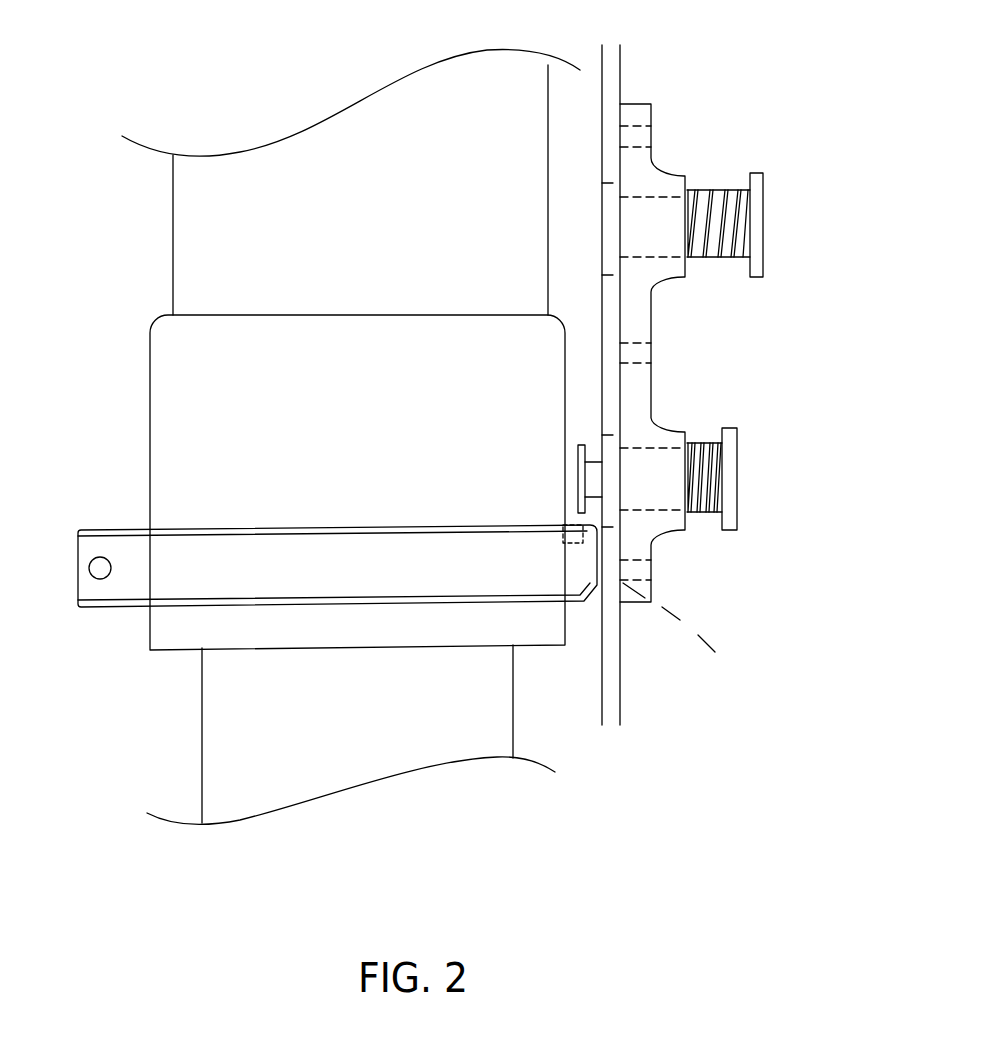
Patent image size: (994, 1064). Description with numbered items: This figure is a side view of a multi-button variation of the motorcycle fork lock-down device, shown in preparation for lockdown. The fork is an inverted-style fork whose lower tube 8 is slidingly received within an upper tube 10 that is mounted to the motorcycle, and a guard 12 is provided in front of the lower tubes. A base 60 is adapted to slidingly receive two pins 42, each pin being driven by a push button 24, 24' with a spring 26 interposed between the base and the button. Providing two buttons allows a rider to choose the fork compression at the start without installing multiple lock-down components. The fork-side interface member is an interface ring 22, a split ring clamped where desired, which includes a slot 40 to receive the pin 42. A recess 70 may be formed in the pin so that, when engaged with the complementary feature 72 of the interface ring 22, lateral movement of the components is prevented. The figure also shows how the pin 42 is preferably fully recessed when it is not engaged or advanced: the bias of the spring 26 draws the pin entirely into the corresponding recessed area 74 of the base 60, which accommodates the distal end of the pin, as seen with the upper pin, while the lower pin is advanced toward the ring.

The lower tube 8 is at (230, 745).
The upper tube 10 is at (202, 270).
The guard 12 is at (610, 678).
The interface ring 22 is at (137, 575).
The push button 24 is at (771, 232).
The push button 24' is at (782, 529).
The spring 26 is at (733, 257).
The slot 40 is at (678, 630).
The pin 42 is at (712, 257).
The base 60 is at (637, 157).
The recess 70 is at (590, 498).
The complementary feature 72 is at (590, 557).
The recessed area 74 is at (584, 190).